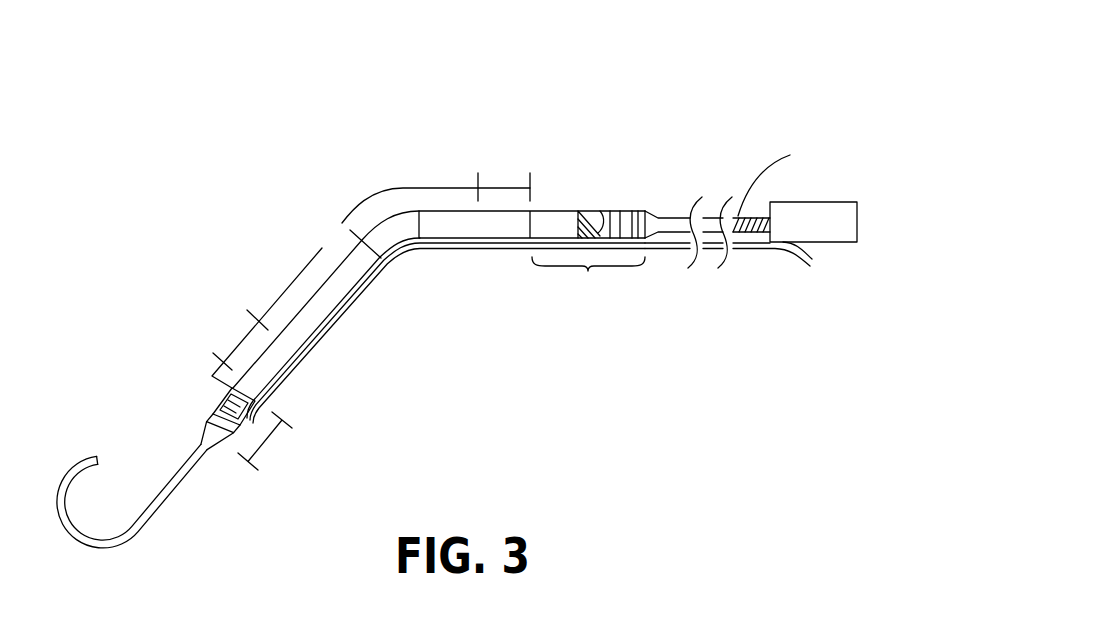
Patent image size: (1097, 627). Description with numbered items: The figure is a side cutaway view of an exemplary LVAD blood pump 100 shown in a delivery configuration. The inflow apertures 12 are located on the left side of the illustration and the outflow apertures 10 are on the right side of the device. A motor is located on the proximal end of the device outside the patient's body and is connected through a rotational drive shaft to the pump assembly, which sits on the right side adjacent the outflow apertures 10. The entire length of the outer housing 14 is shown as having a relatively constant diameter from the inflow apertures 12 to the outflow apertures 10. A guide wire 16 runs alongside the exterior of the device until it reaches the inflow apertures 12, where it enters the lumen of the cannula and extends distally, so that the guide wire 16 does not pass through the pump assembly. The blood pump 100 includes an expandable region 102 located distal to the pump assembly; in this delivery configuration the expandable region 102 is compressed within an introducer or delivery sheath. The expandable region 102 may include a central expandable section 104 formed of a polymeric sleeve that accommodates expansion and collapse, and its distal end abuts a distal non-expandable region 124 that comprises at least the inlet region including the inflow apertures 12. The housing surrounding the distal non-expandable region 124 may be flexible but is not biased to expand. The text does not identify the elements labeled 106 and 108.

The LVAD blood pump 100 is at (708, 88).
The expandable region 102 is at (451, 128).
The central expandable section 104 is at (371, 288).
The housing section 106 is at (494, 187).
The outer sheath section 108 is at (237, 347).
The outflow apertures 10 is at (592, 218).
The inflow apertures 12 is at (237, 393).
The outer housing 14 is at (307, 338).
The guide wire 16 is at (663, 250).
The distal non-expandable region 124 is at (268, 440).